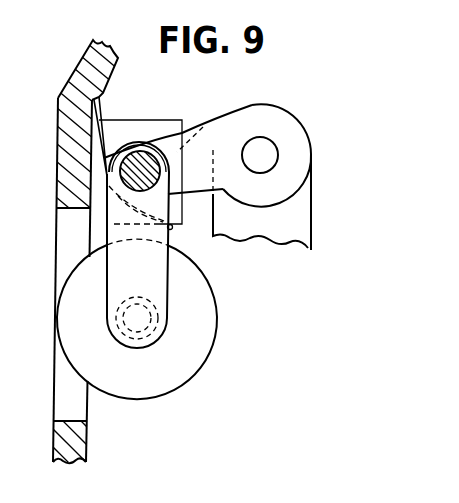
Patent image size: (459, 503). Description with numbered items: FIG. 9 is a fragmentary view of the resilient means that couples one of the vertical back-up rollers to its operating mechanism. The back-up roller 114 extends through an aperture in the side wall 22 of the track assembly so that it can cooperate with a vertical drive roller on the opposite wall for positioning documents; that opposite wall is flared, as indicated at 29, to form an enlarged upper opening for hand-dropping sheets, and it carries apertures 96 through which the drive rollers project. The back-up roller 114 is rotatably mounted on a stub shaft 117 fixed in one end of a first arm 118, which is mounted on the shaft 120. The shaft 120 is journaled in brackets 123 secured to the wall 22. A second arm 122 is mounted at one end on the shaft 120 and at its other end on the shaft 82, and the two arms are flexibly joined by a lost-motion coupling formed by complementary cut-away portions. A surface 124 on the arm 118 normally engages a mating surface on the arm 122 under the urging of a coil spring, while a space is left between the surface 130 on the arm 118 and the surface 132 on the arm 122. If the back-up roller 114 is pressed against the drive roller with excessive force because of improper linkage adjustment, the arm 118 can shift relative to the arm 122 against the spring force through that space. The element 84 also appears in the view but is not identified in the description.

The flared portion 29 is at (78, 67).
The side wall 22 is at (78, 445).
The apertures 96 is at (67, 420).
The brackets 123 is at (102, 142).
The surface 124 is at (108, 188).
The first arm 118 is at (160, 260).
The shaft 120 is at (129, 150).
The surface 130 is at (146, 144).
The surface 132 is at (202, 152).
The second arm 122 is at (252, 105).
The bracket body 84 is at (300, 212).
The shaft 82 is at (277, 148).
The back-up roller 114 is at (200, 353).
The stub shaft 117 is at (155, 322).